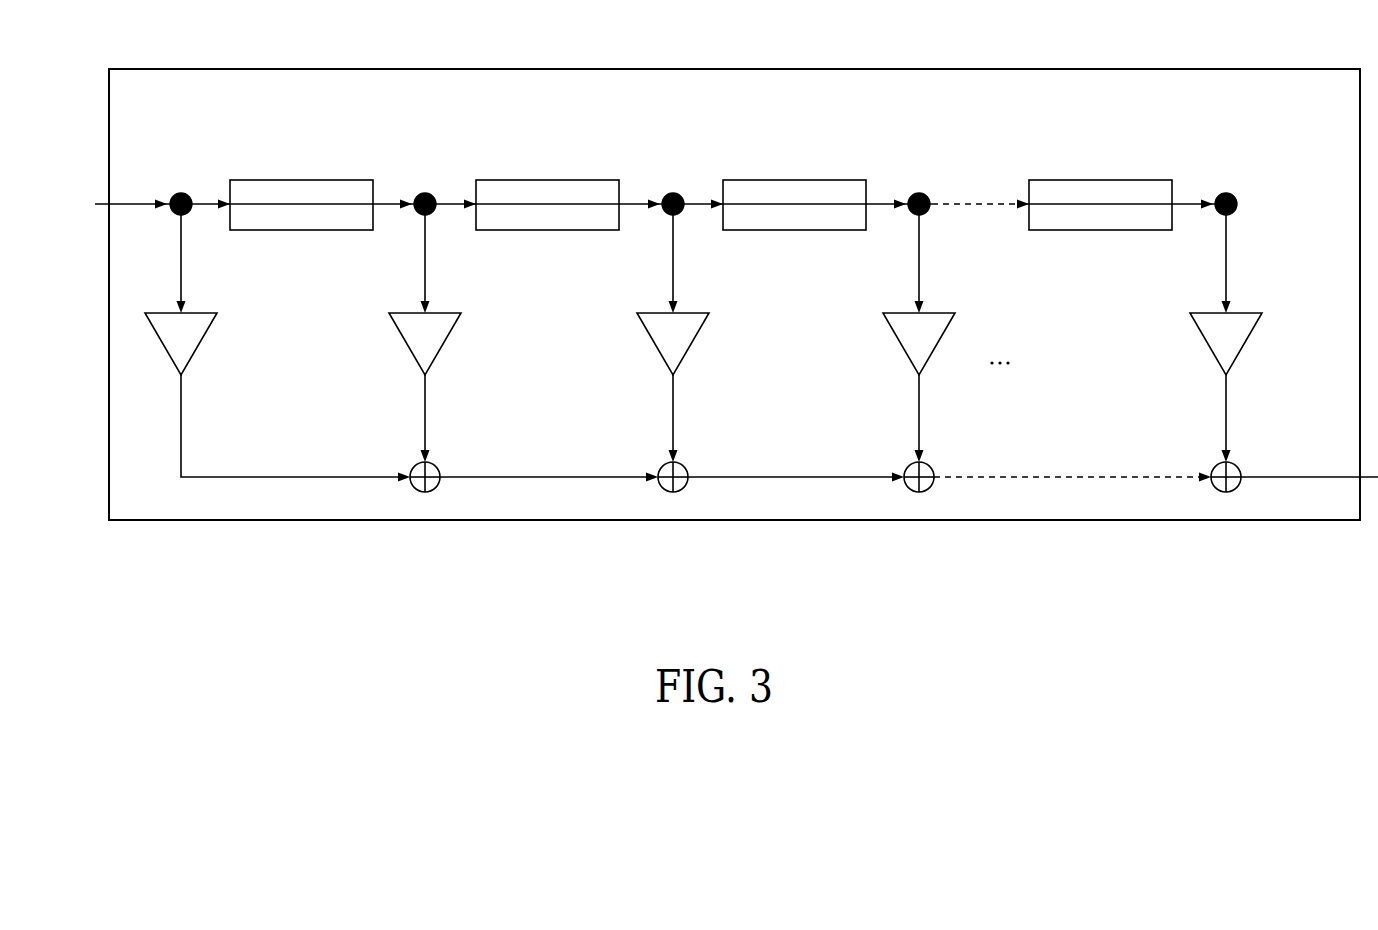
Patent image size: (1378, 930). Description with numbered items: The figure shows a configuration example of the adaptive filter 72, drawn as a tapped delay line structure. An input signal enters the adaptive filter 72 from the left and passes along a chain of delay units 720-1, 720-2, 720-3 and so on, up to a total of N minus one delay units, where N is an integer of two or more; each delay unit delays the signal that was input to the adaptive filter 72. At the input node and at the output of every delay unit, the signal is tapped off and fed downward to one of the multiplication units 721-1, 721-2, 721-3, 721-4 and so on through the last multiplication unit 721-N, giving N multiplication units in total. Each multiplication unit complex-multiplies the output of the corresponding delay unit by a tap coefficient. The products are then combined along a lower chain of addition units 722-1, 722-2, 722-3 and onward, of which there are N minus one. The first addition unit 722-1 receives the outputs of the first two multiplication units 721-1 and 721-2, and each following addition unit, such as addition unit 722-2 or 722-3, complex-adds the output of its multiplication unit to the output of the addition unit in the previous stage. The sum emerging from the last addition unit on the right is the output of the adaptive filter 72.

The adaptive filter 72 is at (1314, 68).
The delay unit 720-1 is at (338, 179).
The delay unit 720-2 is at (586, 179).
The delay unit 720-3 is at (834, 179).
The multiplication unit 721-1 is at (207, 312).
The multiplication unit 721-2 is at (451, 312).
The multiplication unit 721-3 is at (700, 312).
The multiplication unit 721-4 is at (945, 312).
The multiplication unit 721-N is at (1251, 312).
The addition unit 722-1 is at (433, 460).
The addition unit 722-2 is at (681, 460).
The addition unit 722-3 is at (927, 460).